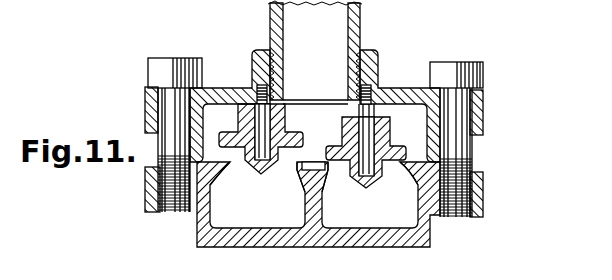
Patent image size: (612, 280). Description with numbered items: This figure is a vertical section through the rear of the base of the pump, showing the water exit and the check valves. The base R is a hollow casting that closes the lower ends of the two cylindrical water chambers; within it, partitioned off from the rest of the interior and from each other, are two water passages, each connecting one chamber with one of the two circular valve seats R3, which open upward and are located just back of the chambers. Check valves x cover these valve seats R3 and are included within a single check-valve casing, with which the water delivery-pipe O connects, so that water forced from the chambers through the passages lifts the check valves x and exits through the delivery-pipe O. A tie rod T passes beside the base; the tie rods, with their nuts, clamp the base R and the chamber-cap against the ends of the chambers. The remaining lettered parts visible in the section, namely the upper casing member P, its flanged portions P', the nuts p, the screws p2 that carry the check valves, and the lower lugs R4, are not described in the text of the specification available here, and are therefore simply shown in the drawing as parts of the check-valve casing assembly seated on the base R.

The water delivery-pipe O is at (315, 52).
The cover plate P is at (315, 106).
The bolt nuts p is at (315, 73).
The valve screws p2 is at (314, 130).
The side flanges P' is at (316, 111).
The check valve x is at (313, 146).
The circular valve seat R3 is at (314, 181).
The lower lugs R4 is at (319, 192).
The base R is at (318, 219).
The tie rod T is at (315, 184).